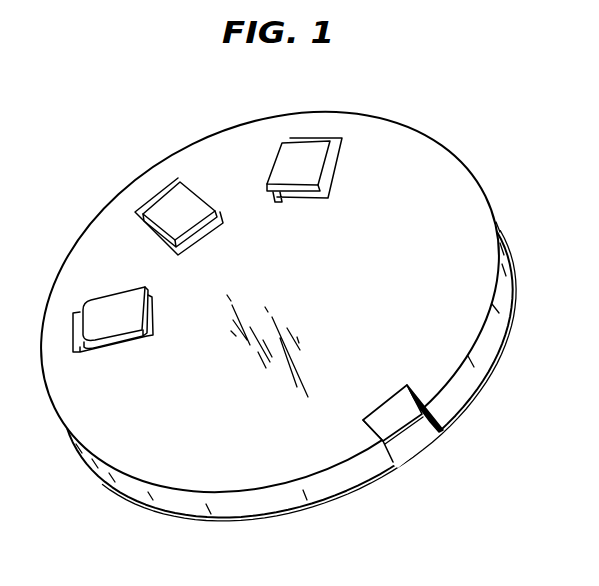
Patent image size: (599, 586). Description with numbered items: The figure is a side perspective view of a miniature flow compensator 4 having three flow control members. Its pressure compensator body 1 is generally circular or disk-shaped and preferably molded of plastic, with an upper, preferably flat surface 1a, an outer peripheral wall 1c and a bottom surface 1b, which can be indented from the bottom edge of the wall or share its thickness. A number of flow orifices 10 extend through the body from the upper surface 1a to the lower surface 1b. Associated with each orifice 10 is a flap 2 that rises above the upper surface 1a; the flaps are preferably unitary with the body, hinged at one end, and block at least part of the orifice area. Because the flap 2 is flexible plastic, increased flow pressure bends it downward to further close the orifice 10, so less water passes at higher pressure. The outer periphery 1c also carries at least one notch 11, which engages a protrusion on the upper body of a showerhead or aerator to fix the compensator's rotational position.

The pressure compensator body 1 is at (378, 278).
The upper surface 1a is at (460, 306).
The bottom surface 1b is at (108, 522).
The outer peripheral wall 1c is at (468, 380).
The flap 2 is at (310, 165).
The miniature flow compensator 4 is at (560, 112).
The flow orifice 10 is at (332, 187).
The notch 11 is at (395, 418).